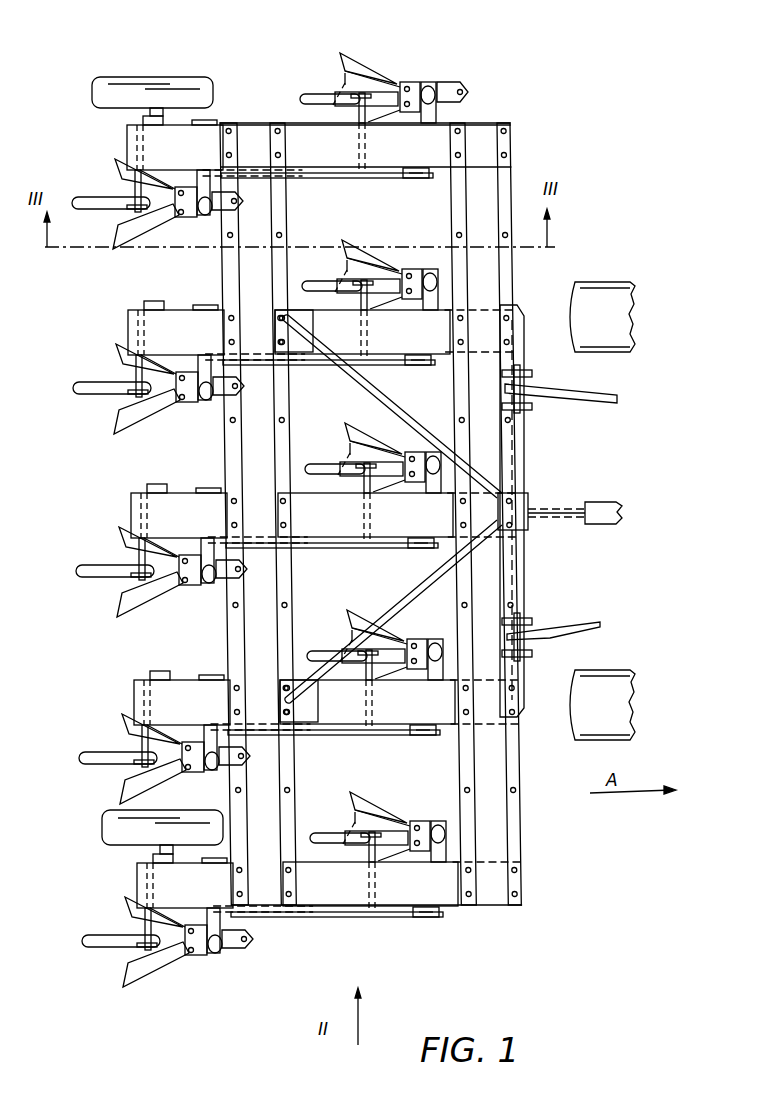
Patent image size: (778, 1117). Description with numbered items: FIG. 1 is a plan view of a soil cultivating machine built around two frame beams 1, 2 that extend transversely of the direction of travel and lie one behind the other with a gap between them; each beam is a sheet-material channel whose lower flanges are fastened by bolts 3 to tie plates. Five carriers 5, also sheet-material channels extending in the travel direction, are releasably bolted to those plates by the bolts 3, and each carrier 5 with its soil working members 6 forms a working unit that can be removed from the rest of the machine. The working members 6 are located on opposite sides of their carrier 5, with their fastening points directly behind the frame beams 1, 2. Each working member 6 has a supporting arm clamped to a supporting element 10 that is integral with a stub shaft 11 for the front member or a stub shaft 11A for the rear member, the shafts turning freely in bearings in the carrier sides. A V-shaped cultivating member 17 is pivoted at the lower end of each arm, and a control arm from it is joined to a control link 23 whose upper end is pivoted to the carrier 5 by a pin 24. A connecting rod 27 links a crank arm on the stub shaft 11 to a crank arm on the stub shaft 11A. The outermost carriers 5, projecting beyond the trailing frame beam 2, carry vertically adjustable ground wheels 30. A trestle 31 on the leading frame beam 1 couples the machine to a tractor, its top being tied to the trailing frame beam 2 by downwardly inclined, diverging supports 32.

The frame beam 1 is at (492, 278).
The frame beam 2 is at (247, 262).
The bolts 3 is at (238, 125).
The carrier 5 is at (158, 143).
The soil working member 6 is at (158, 202).
The supporting element 10 is at (452, 90).
The stub shaft 11 is at (430, 118).
The stub shaft 11A is at (208, 182).
The cultivating member 17 is at (125, 223).
The control link 23 is at (85, 195).
The pin 24 is at (354, 150).
The connecting rod 27 is at (357, 179).
The ground wheel 30 is at (92, 97).
The trestle 31 is at (520, 447).
The supports 32 is at (352, 390).